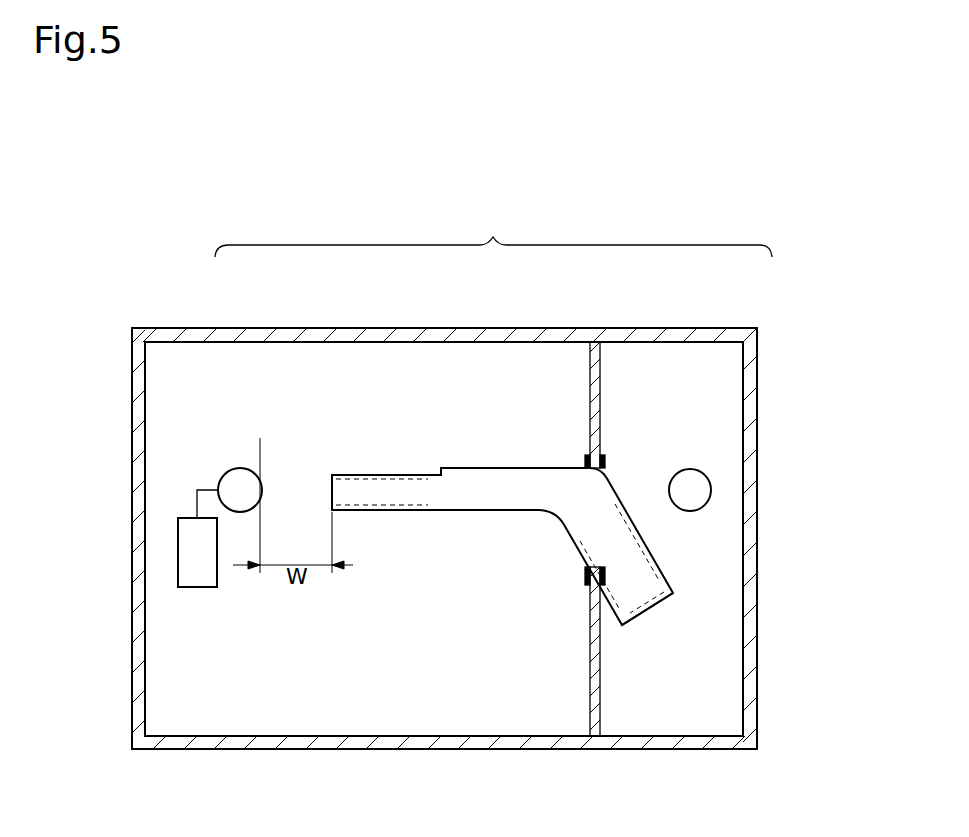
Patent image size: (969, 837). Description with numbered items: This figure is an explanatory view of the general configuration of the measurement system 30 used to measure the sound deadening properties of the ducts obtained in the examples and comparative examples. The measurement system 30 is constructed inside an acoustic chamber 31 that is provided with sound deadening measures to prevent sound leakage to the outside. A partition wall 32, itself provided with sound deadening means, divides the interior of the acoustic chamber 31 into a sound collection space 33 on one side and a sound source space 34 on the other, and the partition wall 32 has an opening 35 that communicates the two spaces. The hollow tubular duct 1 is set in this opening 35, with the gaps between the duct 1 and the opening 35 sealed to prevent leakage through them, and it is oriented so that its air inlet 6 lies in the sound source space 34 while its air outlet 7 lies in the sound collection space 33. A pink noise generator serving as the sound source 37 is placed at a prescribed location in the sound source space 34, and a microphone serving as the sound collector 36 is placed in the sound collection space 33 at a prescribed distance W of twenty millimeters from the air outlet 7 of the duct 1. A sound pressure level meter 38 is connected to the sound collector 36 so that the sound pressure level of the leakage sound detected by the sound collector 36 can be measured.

The duct 1 is at (522, 497).
The air inlet 6 is at (650, 608).
The air outlet 7 is at (330, 497).
The measurement system 30 is at (493, 228).
The acoustic chamber 31 is at (757, 587).
The partition wall 32 is at (590, 384).
The sound collection space 33 is at (488, 362).
The sound source space 34 is at (665, 362).
The opening 35 is at (603, 473).
The sound collector 36 is at (240, 470).
The sound source 37 is at (690, 468).
The sound pressure level meter 38 is at (190, 537).